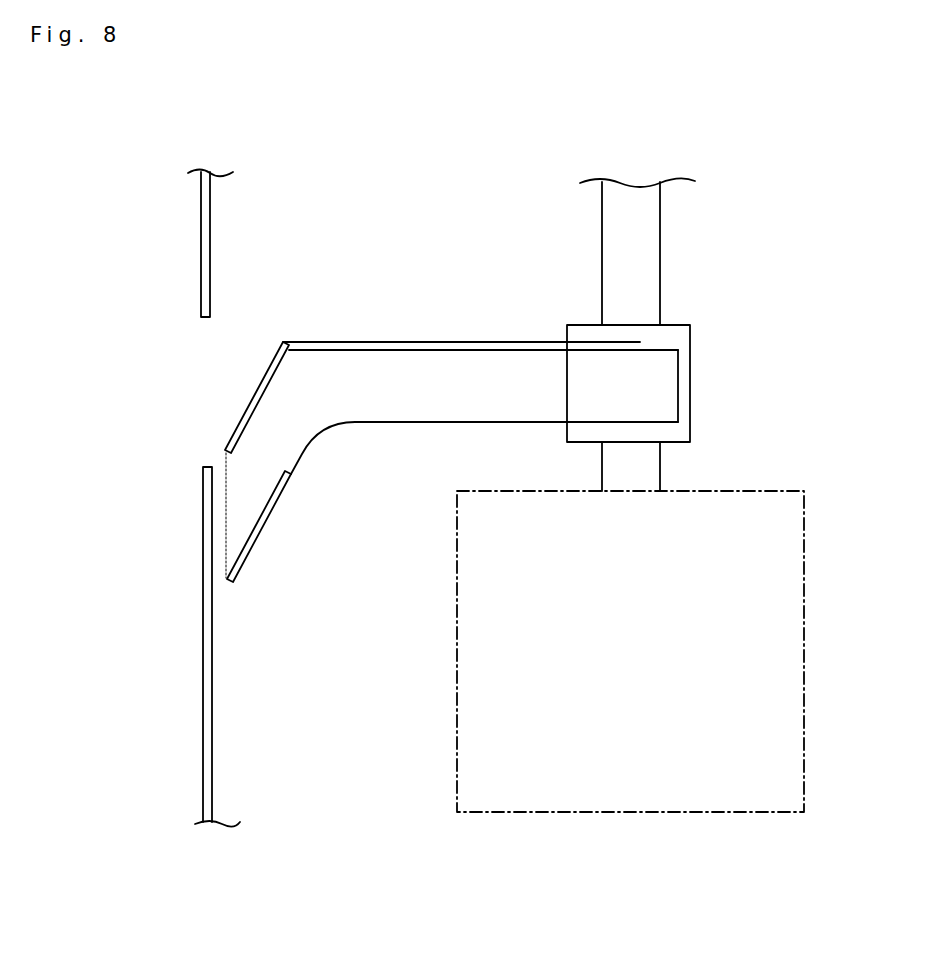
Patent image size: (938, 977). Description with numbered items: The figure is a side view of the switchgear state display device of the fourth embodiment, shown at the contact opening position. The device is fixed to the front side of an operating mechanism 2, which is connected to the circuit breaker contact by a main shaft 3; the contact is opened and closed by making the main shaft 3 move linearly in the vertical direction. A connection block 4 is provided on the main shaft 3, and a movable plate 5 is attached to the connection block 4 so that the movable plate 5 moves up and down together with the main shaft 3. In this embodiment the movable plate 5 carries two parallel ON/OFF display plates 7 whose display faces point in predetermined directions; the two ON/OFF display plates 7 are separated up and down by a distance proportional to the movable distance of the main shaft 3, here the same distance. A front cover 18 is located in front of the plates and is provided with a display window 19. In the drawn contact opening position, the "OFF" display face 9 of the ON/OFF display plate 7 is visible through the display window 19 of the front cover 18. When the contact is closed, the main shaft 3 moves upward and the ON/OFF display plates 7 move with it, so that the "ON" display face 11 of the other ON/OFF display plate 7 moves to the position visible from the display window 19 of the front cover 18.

The operating mechanism 2 is at (770, 506).
The main shaft 3 is at (652, 222).
The connection block 4 is at (686, 332).
The movable plate 5 is at (669, 393).
The ON/OFF display plate 7 is at (271, 360).
The "OFF" display face 9 is at (250, 405).
The "ON" display face 11 is at (250, 537).
The front cover 18 is at (205, 243).
The display window 19 is at (203, 352).